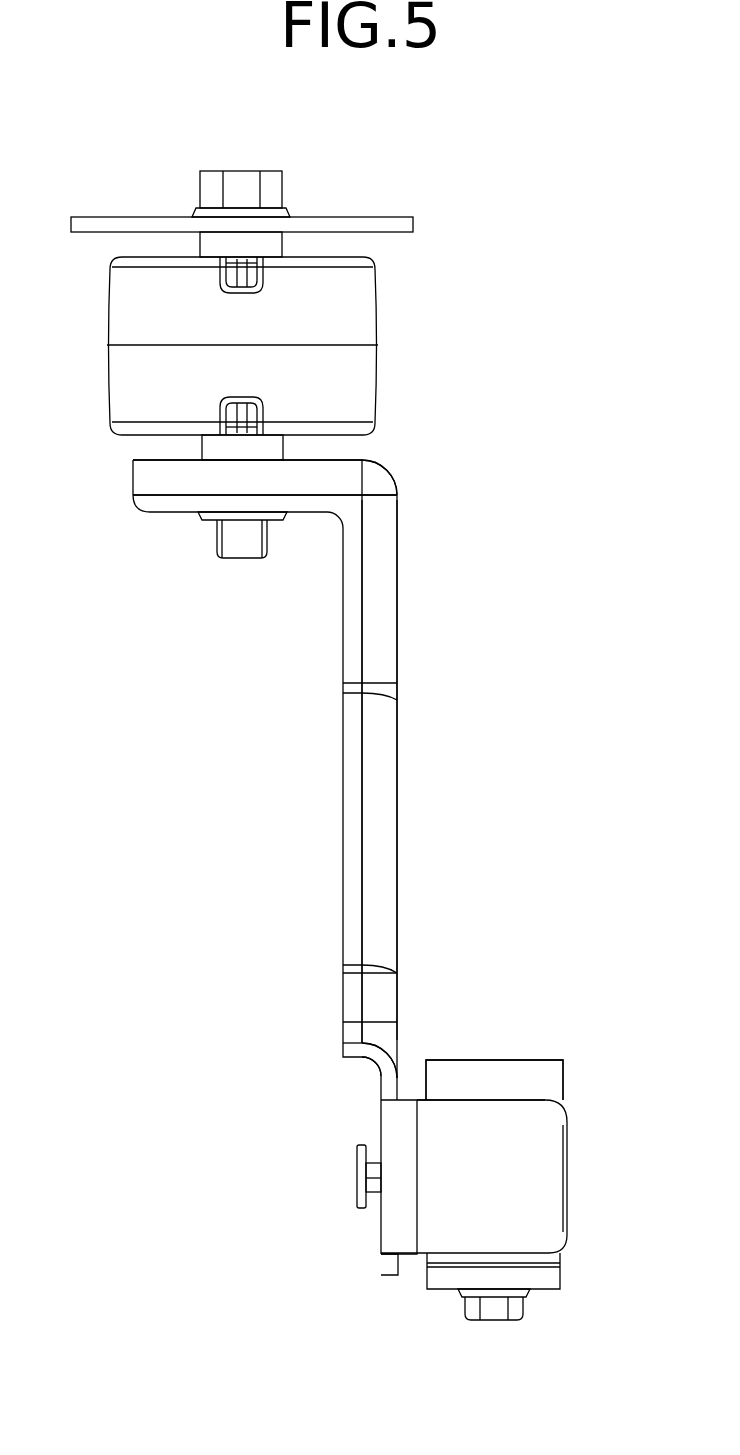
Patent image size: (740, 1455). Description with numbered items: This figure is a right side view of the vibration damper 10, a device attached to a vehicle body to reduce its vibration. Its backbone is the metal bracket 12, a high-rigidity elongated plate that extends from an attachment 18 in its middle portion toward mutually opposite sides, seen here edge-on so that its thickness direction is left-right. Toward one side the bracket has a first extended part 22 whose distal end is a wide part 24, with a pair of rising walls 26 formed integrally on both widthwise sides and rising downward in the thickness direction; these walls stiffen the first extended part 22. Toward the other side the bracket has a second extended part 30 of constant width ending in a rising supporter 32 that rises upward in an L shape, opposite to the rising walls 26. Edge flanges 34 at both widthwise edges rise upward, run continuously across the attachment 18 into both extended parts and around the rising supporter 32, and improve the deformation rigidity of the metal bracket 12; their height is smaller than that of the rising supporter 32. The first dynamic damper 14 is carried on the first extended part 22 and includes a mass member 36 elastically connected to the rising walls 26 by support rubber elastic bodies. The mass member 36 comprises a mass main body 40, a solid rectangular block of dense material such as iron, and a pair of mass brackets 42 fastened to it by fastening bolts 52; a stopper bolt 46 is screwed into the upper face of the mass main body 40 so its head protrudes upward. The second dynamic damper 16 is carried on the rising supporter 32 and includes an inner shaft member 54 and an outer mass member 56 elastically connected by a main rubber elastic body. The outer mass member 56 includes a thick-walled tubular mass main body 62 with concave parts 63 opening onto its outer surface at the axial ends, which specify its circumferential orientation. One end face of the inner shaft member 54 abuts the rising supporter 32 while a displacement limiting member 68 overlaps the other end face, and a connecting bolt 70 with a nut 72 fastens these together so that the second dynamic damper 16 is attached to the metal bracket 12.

The vibration damper 10 is at (514, 236).
The metal bracket 12 is at (450, 734).
The first dynamic damper 14 is at (600, 1248).
The second dynamic damper 16 is at (409, 336).
The attachment 18 is at (399, 852).
The first extended part 22 is at (372, 1091).
The wide part 24 is at (392, 1095).
The rising walls 26 is at (530, 1183).
The second extended part 30 is at (400, 597).
The rising supporter 32 is at (318, 468).
The edge flanges 34 is at (352, 795).
The mass member 36 is at (528, 1056).
The mass main body 40 is at (493, 1085).
The mass brackets 42 is at (543, 1300).
The stopper bolt 46 is at (377, 1177).
The fastening bolt 52 is at (498, 1310).
The inner shaft member 54 is at (258, 447).
The outer mass member 56 is at (104, 380).
The mass main body 62 is at (132, 309).
The concave parts 63 is at (247, 277).
The displacement limiting member 68 is at (113, 225).
The connecting bolt 70 is at (212, 190).
The nut 72 is at (210, 517).